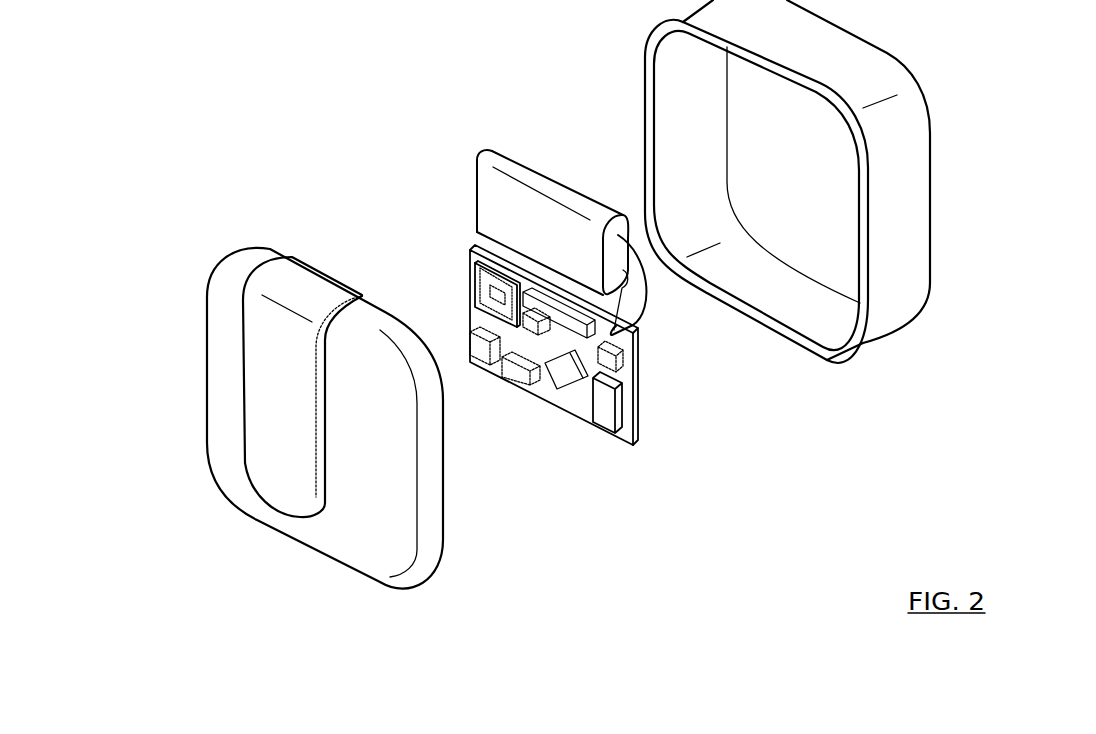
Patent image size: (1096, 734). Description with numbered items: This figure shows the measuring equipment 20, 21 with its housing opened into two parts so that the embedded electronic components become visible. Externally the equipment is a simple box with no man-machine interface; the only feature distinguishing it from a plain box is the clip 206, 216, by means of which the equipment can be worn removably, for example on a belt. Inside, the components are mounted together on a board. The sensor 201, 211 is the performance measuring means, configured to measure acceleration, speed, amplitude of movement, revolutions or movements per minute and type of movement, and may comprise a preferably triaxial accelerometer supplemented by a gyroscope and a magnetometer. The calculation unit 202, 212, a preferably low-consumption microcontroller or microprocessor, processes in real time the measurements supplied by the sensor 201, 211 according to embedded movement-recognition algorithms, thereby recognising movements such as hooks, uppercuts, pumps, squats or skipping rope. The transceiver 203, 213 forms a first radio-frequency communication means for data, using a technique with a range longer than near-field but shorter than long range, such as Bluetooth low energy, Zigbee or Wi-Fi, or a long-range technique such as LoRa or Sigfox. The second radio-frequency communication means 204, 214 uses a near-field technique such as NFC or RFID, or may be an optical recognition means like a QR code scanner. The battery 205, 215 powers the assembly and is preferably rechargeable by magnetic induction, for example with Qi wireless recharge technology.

The measuring equipment 20 is at (501, 295).
The measuring equipment 21 is at (393, 83).
The sensor 201 is at (622, 345).
The sensor 211 is at (640, 388).
The calculation unit 202 is at (520, 413).
The calculation unit 212 is at (562, 378).
The transceiver 203 is at (684, 421).
The transceiver 213 is at (599, 420).
The second radio-frequency communication means 204 is at (401, 272).
The second radio-frequency communication means 214 is at (490, 293).
The battery 205 is at (476, 216).
The battery 215 is at (495, 158).
The clip 206 is at (257, 419).
The clip 216 is at (282, 468).